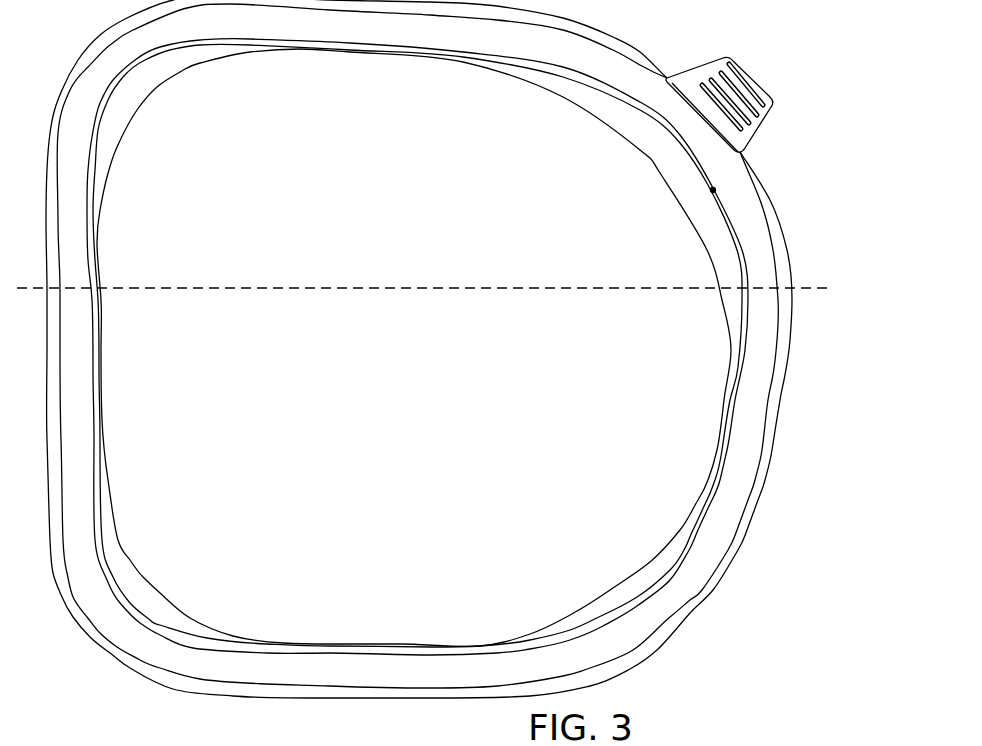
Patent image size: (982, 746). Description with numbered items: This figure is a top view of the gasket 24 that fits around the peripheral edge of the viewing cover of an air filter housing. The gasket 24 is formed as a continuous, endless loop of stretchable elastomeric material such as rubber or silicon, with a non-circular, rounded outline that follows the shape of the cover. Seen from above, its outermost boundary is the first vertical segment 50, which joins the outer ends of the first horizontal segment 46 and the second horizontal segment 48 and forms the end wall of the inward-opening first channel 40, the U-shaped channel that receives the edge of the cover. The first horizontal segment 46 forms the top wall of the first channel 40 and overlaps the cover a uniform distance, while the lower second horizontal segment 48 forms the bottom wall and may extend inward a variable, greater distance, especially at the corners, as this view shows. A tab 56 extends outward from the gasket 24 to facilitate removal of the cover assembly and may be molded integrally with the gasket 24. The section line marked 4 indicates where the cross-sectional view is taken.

The section line 4- 4 is at (17, 305).
The gasket 24 is at (850, 443).
The first channel 40 is at (714, 190).
The first horizontal segment 46 is at (80, 457).
The second horizontal segment 48 is at (715, 230).
The first vertical segment 50 is at (90, 636).
The tab 56 is at (748, 77).